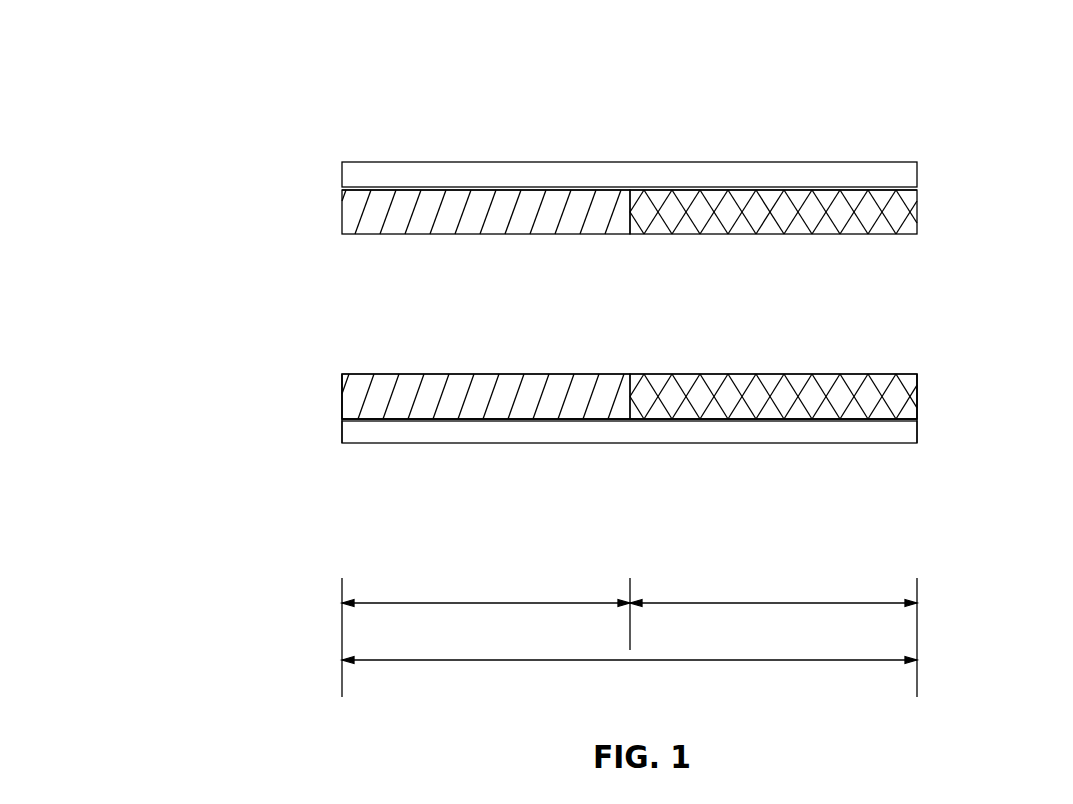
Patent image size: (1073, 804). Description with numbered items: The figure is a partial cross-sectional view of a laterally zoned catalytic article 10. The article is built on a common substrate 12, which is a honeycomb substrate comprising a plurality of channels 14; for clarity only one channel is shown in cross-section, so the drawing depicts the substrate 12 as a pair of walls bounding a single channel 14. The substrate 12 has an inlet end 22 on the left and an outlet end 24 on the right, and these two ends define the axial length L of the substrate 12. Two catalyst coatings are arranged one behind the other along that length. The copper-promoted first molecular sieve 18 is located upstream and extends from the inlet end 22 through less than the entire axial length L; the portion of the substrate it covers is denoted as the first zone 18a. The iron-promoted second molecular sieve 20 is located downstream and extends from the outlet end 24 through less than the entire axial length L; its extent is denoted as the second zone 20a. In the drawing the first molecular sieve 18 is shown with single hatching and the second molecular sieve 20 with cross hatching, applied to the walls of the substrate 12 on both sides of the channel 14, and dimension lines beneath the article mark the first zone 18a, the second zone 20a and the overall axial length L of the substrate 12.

The catalytic article 10 is at (315, 125).
The substrate 12 is at (905, 184).
The channels 14 is at (583, 313).
The copper-promoted first molecular sieve 18 is at (480, 200).
The iron-promoted second molecular sieve 20 is at (820, 202).
The inlet end 22 is at (370, 333).
The outlet end 24 is at (922, 326).
The first zone 18a is at (486, 637).
The second zone 20a is at (773, 637).
The axial length L is at (629, 680).